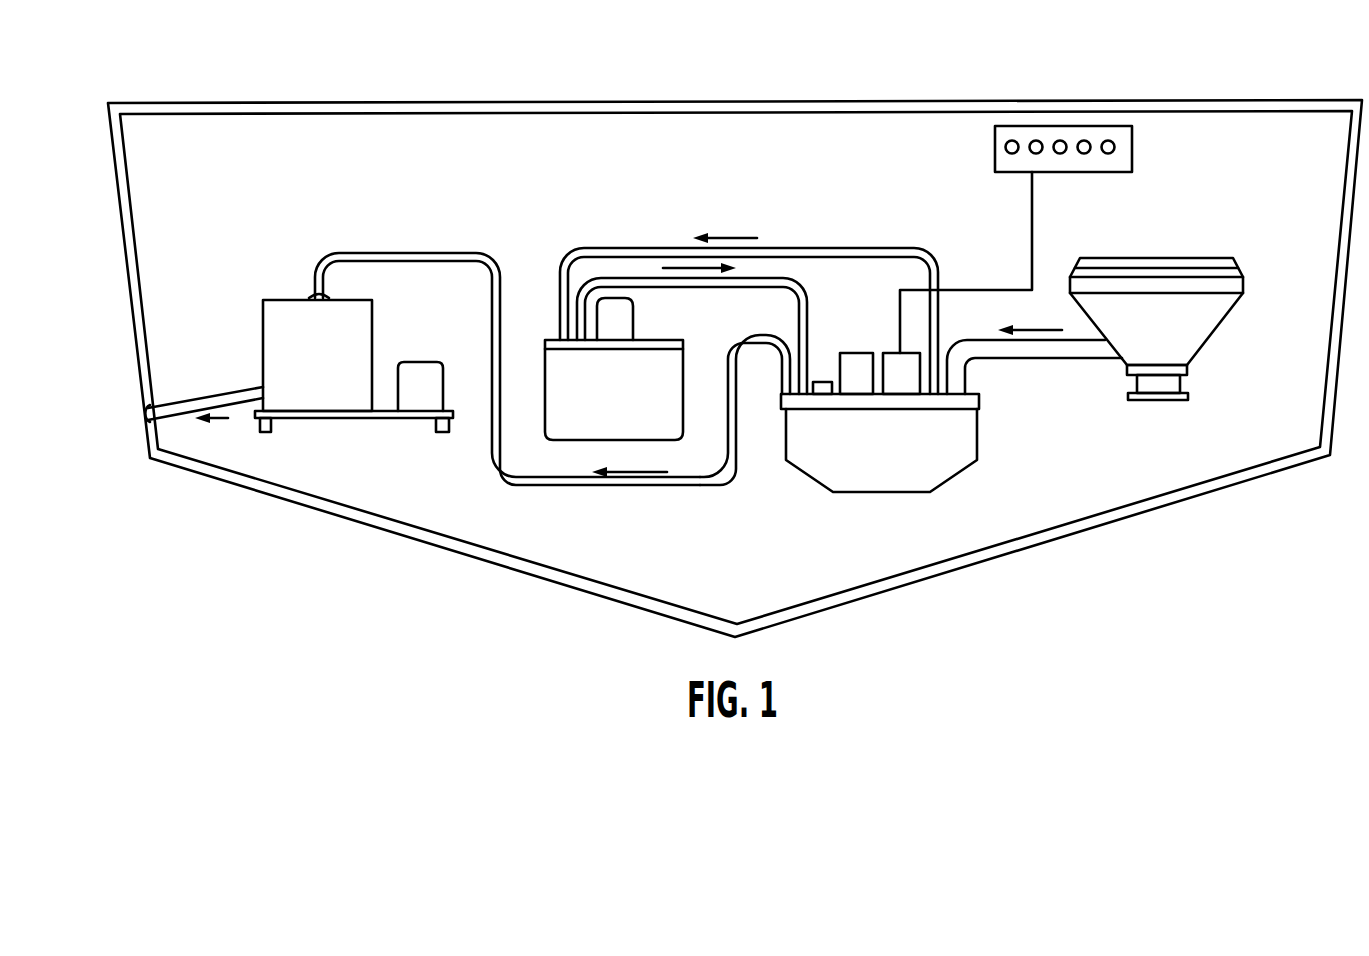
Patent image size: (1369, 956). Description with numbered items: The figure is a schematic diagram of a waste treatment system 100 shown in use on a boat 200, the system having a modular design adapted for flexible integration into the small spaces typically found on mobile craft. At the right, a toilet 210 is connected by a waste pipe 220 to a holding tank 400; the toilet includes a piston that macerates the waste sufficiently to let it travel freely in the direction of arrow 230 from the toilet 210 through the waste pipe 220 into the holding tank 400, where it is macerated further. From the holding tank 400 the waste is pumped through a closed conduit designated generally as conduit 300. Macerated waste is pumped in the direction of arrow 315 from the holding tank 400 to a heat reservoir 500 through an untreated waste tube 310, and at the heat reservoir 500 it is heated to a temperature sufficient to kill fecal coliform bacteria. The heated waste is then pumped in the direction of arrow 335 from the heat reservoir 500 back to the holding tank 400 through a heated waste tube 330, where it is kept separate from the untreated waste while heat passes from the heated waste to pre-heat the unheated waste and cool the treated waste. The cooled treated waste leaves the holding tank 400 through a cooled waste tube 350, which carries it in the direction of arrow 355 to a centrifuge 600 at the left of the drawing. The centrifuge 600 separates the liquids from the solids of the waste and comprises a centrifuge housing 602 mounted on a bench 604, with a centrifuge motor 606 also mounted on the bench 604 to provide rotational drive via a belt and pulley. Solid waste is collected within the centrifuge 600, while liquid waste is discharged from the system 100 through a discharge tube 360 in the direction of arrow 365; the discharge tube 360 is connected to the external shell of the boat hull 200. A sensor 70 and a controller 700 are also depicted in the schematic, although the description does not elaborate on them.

The waste treatment system 100 is at (645, 168).
The boat 200 is at (612, 600).
The toilet 210 is at (1213, 307).
The waste pipe 220 is at (1060, 355).
The arrow 230 is at (1030, 312).
The closed conduit 300 is at (580, 235).
The untreated waste tube 310 is at (848, 248).
The arrow 315 is at (725, 220).
The heated waste tube 330 is at (774, 288).
The arrow 335 is at (665, 270).
The cooled waste tube 350 is at (620, 488).
The arrow 355 is at (658, 472).
The discharge tube 360 is at (218, 396).
The arrow 365 is at (217, 434).
The holding tank 400 is at (812, 480).
The heat reservoir 500 is at (676, 364).
The centrifuge 600 is at (263, 318).
The centrifuge housing 602 is at (338, 364).
The bench 604 is at (308, 418).
The centrifuge motor 606 is at (423, 362).
The sensor 70 is at (822, 382).
The controller 700 is at (994, 146).